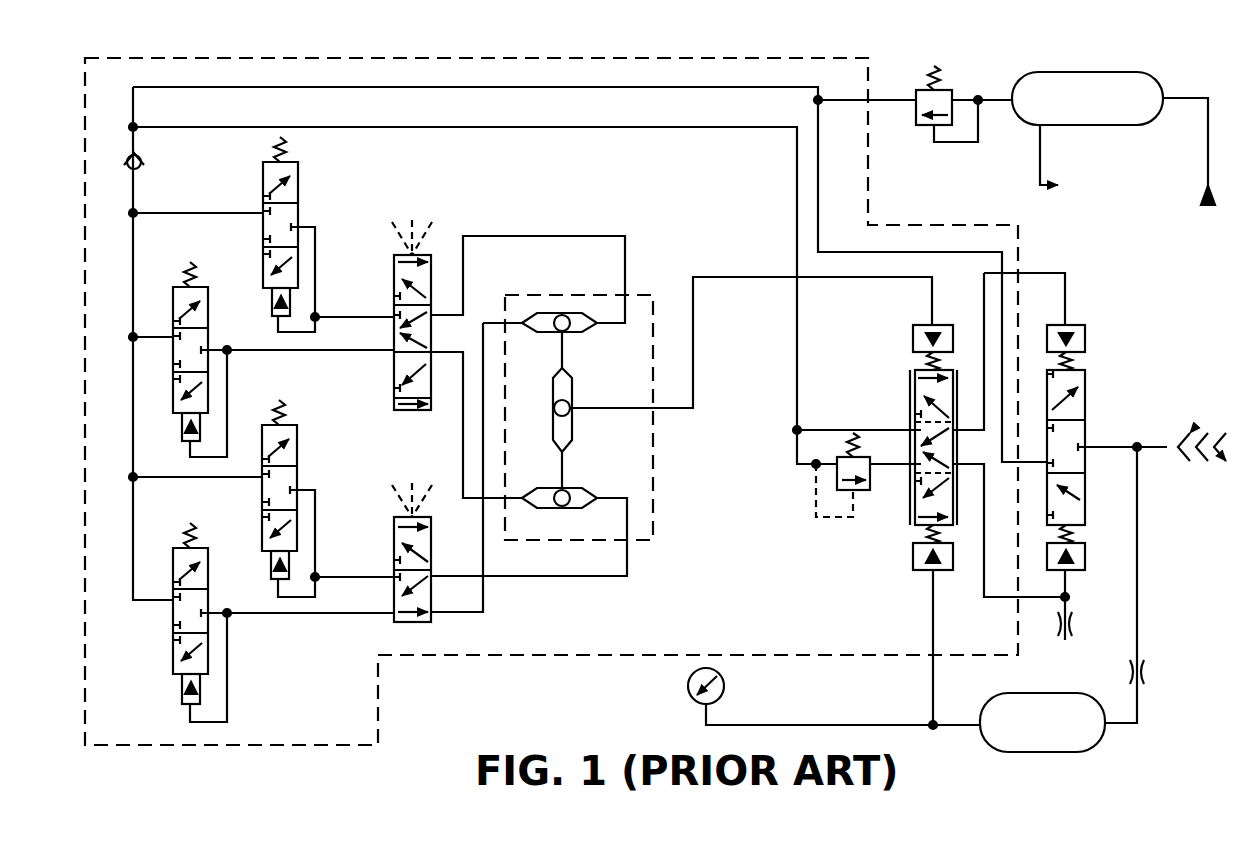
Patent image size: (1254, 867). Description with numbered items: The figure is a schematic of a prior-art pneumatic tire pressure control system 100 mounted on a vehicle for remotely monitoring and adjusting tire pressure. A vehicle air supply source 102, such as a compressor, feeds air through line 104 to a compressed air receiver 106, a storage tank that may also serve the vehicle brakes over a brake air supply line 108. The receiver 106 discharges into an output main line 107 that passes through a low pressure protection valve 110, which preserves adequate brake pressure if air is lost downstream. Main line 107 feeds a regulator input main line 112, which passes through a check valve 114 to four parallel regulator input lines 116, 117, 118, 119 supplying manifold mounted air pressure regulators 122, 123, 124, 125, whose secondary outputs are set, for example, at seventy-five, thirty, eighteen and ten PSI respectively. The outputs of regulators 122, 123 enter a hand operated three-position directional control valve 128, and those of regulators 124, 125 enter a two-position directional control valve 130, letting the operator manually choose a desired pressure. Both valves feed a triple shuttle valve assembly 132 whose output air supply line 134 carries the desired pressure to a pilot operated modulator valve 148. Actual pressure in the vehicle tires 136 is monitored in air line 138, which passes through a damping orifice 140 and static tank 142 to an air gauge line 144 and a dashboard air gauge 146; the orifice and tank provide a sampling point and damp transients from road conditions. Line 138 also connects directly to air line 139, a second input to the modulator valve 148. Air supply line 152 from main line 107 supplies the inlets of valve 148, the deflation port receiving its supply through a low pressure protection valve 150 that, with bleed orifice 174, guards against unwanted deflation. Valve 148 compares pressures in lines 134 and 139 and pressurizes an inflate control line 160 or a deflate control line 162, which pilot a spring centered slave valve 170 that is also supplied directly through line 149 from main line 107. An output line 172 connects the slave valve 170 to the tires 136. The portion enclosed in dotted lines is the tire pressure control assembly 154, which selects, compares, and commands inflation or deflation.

The pneumatic tire pressure control system 100 is at (146, 757).
The vehicle air supply source 102 is at (1206, 250).
The line 104 is at (1208, 128).
The compressed air receiver 106 is at (1163, 85).
The output main line 107 is at (988, 95).
The brake air supply line 108 is at (1038, 168).
The low pressure protection valve 110 is at (935, 140).
The regulator input main line 112 is at (425, 84).
The check valve 114 is at (128, 170).
The regulator input line 116 is at (193, 212).
The regulator input line 117 is at (158, 335).
The regulator input line 118 is at (163, 477).
The regulator input line 119 is at (150, 603).
The air pressure regulator 122 is at (300, 197).
The air pressure regulator 123 is at (212, 335).
The air pressure regulator 124 is at (298, 440).
The air pressure regulator 125 is at (210, 583).
The directional control valve 128 is at (393, 396).
The directional control valve 130 is at (393, 533).
The triple shuttle valve assembly 132 is at (655, 478).
The output air supply line 134 is at (751, 280).
The vehicle tires 136 is at (1203, 463).
The air line 138 is at (1140, 553).
The air line 139 is at (930, 615).
The damping orifice 140 is at (1150, 672).
The static tank 142 is at (1097, 748).
The air gauge line 144 is at (870, 727).
The air gauge 146 is at (690, 694).
The modulator valve 148 is at (912, 528).
The line 149 is at (818, 147).
The low pressure protection valve 150 is at (806, 519).
The air supply line 152 is at (798, 378).
The tire pressure control assembly 154 is at (355, 746).
The inflate control line 160 is at (1065, 292).
The deflate control line 162 is at (998, 599).
The slave valve 170 is at (1086, 386).
The output line 172 is at (1120, 445).
The bleed orifice 174 is at (1080, 622).